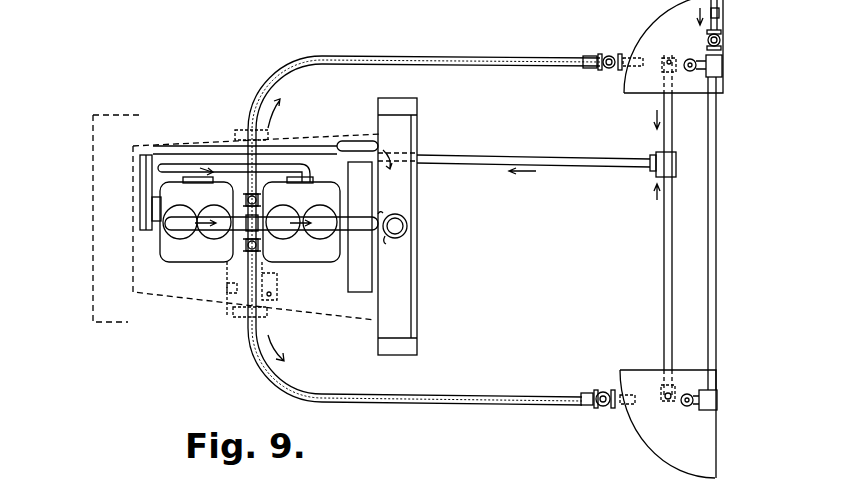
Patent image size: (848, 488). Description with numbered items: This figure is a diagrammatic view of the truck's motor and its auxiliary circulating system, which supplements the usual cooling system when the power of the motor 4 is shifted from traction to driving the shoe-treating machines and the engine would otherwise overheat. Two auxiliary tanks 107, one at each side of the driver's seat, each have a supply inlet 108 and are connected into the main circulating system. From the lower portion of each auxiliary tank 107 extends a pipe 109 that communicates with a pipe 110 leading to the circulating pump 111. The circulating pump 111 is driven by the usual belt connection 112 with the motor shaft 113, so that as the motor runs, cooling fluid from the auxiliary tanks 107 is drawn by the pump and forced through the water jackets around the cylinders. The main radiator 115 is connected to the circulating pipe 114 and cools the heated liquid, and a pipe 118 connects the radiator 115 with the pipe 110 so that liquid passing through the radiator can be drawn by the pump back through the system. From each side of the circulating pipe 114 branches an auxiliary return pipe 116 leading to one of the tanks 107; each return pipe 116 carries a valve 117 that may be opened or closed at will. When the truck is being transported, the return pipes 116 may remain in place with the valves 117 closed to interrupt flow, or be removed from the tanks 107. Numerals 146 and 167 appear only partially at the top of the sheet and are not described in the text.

The motor 4 is at (180, 243).
The auxiliary tank 107 is at (668, 37).
The supply inlet 108 is at (748, 24).
The pipe 109 is at (665, 236).
The pipe 110 is at (483, 156).
The circulating pump 111 is at (157, 148).
The belt connection 112 is at (143, 183).
The motor shaft 113 is at (147, 217).
The circulating pipe 114 is at (195, 262).
The main radiator 115 is at (400, 312).
The auxiliary return pipe 116 is at (283, 62).
The valve 117 is at (285, 152).
The pipe 118 is at (358, 146).
The reference element 146 is at (413, 6).
The reference element 167 is at (486, 6).